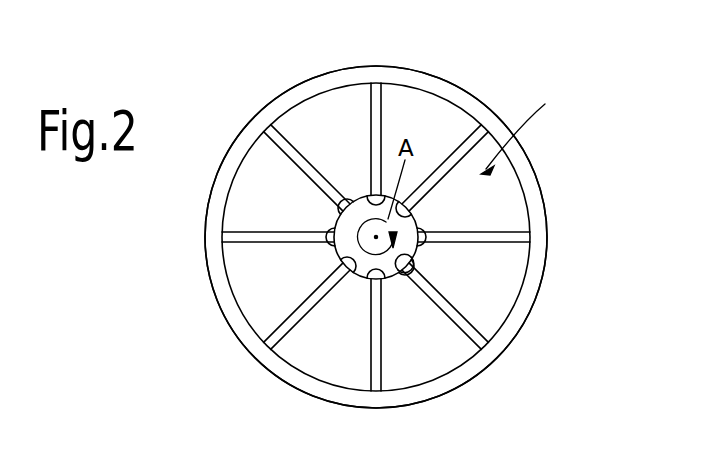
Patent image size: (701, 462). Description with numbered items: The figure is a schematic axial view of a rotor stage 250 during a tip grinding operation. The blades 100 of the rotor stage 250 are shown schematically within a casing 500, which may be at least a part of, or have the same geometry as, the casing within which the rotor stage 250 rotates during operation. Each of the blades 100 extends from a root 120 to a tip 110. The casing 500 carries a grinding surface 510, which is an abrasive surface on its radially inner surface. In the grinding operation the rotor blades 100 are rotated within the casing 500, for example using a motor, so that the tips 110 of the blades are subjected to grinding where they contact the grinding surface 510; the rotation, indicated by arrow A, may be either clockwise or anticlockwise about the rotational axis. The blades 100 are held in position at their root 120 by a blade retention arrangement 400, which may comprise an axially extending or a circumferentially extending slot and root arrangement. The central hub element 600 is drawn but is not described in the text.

The blades 100 is at (468, 330).
The tip 110 is at (470, 348).
The root 120 is at (406, 267).
The rotor stage 250 is at (526, 127).
The blade retention arrangement 400 is at (405, 271).
The casing 500 is at (538, 252).
The grinding surface 510 is at (528, 194).
The hub 600 is at (338, 217).